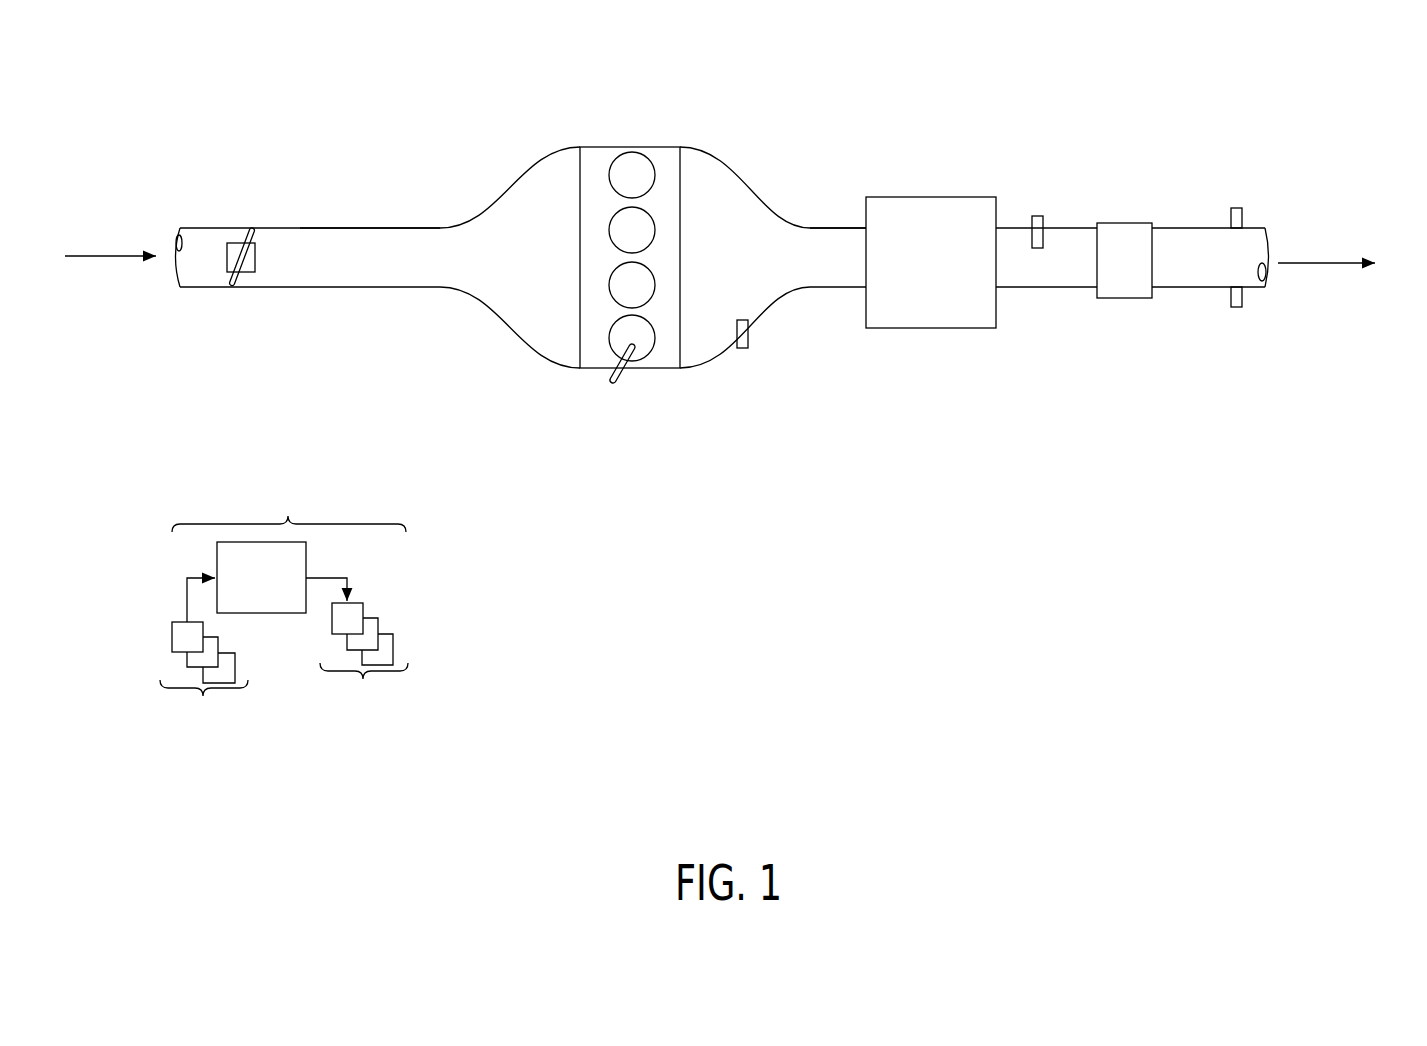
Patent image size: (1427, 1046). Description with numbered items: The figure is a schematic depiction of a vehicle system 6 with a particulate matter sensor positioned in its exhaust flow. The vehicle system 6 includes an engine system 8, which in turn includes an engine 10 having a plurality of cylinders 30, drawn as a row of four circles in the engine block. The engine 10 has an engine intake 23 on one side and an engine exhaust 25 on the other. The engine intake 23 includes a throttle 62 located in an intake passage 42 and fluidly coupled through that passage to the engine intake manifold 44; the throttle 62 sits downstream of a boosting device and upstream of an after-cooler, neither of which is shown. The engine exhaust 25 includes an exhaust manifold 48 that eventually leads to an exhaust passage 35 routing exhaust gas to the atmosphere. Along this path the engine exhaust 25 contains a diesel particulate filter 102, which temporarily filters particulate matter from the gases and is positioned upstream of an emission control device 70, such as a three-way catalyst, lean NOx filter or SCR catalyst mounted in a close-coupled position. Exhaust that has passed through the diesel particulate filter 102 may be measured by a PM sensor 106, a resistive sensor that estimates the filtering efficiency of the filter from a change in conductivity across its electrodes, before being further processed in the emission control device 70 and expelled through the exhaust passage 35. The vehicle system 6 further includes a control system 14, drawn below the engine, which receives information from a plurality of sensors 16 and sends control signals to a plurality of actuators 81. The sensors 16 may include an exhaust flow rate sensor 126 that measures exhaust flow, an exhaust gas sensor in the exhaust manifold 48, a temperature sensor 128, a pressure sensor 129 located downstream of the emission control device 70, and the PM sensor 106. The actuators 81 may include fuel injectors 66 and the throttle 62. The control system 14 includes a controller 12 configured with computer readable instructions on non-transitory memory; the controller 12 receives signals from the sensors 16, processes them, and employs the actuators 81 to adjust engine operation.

The vehicle system 6 is at (170, 97).
The engine system 8 is at (664, 127).
The engine 10 is at (680, 247).
The controller 12 is at (261, 577).
The control system 14 is at (271, 608).
The sensors 16 is at (203, 672).
The engine intake 23 is at (380, 222).
The engine exhaust 25 is at (810, 200).
The cylinders 30 is at (617, 157).
The exhaust passage 35 is at (1196, 226).
The intake passage 42 is at (287, 289).
The engine intake manifold 44 is at (510, 257).
The exhaust manifold 48 is at (773, 257).
The throttle 62 is at (255, 262).
The fuel injectors 66 is at (618, 387).
The emission control device 70 is at (1124, 260).
The actuators 81 is at (359, 662).
The diesel particulate filter 102 is at (985, 330).
The PM sensor 106 is at (1040, 214).
The exhaust flow rate sensor 126 is at (745, 351).
The temperature sensor 128 is at (1238, 310).
The pressure sensor 129 is at (1237, 207).